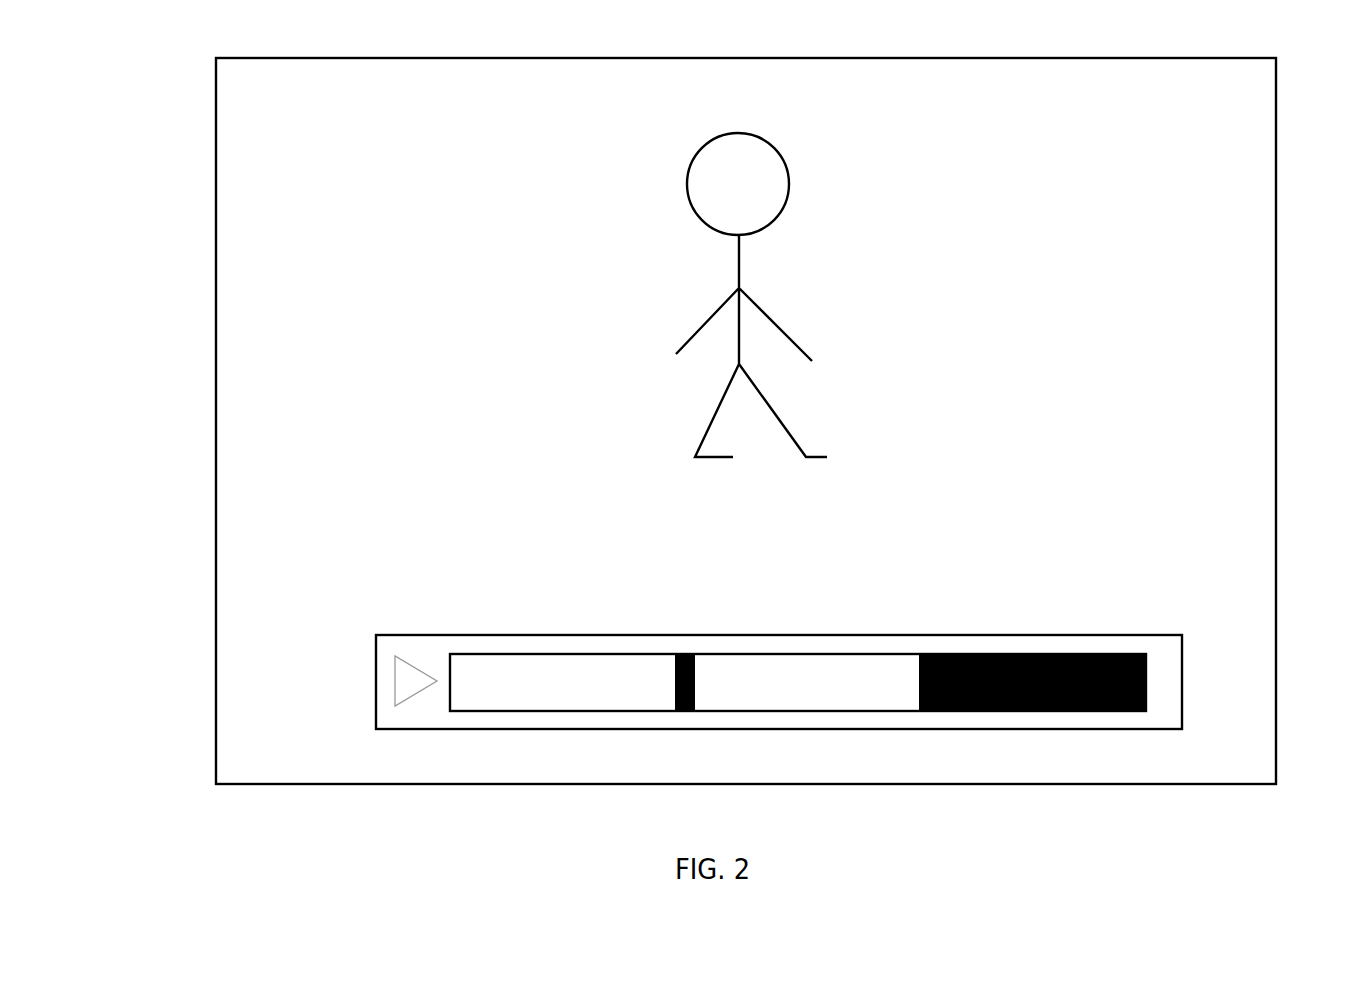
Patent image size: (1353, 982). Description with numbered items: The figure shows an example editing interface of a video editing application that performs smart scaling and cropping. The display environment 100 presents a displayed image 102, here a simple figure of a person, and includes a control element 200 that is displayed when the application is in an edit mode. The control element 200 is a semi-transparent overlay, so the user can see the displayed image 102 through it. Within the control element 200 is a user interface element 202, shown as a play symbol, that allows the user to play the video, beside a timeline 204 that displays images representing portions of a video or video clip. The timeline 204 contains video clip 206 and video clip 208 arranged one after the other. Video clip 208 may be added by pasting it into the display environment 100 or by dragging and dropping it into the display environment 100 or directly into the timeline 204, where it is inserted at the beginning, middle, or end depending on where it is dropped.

The display environment 100 is at (172, 137).
The displayed image 102 is at (600, 241).
The control element 200 is at (472, 613).
The user interface element 202 is at (374, 678).
The timeline 204 is at (1162, 676).
The video clip 206 is at (562, 682).
The video clip 208 is at (807, 682).